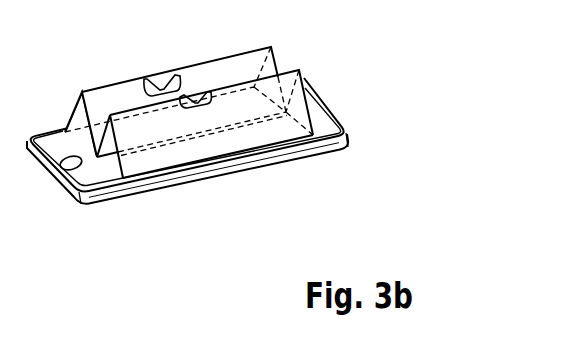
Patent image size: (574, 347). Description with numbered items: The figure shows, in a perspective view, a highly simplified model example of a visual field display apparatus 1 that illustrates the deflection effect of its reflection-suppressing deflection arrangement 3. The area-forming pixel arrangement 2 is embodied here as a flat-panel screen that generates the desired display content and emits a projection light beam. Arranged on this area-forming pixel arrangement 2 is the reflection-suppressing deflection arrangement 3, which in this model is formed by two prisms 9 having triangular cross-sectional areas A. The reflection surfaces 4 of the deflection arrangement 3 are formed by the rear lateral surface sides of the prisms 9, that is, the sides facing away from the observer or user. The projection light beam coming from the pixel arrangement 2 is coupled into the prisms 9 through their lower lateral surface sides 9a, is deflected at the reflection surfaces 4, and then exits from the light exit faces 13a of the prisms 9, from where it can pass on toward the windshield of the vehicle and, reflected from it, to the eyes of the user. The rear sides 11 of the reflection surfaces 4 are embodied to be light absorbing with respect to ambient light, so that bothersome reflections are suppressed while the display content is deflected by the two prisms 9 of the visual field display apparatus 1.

The visual field display apparatus 1 is at (212, 158).
The area-forming pixel arrangement 2 is at (62, 184).
The reflection-suppressing deflection arrangement 3 is at (219, 127).
The reflection surfaces 4 is at (167, 92).
The prisms 9 is at (189, 127).
The lower lateral surface sides 9a is at (102, 173).
The rear sides 11 is at (78, 113).
The light exit faces 13a is at (196, 78).
The triangular cross-sectional areas A is at (68, 128).